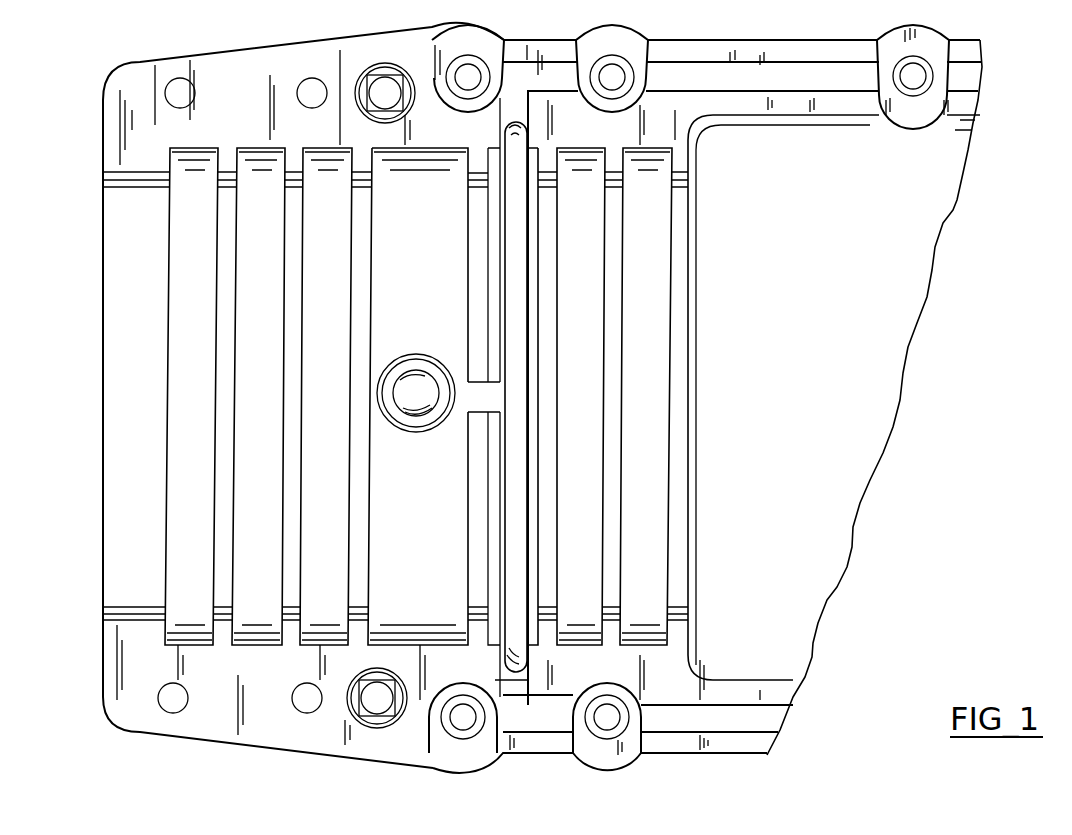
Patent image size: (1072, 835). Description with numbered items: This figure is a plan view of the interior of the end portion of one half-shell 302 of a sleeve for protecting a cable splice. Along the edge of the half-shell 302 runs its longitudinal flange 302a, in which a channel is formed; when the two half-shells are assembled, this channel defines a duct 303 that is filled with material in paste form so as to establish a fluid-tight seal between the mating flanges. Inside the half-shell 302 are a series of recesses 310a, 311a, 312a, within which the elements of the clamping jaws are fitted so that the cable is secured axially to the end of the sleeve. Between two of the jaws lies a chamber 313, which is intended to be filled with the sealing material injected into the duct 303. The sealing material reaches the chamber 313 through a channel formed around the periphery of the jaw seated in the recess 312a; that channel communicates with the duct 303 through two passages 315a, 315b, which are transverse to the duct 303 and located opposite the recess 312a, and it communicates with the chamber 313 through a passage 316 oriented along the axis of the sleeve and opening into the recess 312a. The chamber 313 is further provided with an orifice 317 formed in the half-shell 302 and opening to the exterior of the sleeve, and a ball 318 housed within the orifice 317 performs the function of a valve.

The half-shell 302 is at (300, 36).
The longitudinal flange 302a is at (523, 50).
The duct 303 is at (680, 75).
The recess 310a is at (653, 152).
The recess 311a is at (590, 150).
The recess 312a is at (530, 150).
The chamber 313 is at (390, 617).
The passage 315a is at (510, 109).
The passage 315b is at (507, 695).
The passage 316 is at (483, 400).
The orifice 317 is at (407, 430).
The ball 318 is at (424, 385).